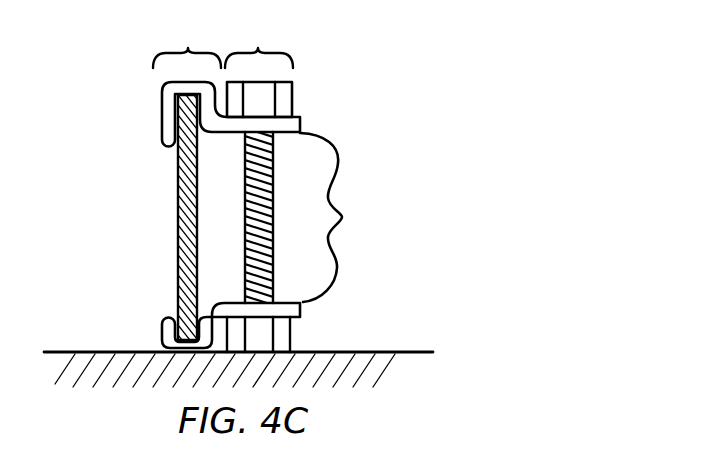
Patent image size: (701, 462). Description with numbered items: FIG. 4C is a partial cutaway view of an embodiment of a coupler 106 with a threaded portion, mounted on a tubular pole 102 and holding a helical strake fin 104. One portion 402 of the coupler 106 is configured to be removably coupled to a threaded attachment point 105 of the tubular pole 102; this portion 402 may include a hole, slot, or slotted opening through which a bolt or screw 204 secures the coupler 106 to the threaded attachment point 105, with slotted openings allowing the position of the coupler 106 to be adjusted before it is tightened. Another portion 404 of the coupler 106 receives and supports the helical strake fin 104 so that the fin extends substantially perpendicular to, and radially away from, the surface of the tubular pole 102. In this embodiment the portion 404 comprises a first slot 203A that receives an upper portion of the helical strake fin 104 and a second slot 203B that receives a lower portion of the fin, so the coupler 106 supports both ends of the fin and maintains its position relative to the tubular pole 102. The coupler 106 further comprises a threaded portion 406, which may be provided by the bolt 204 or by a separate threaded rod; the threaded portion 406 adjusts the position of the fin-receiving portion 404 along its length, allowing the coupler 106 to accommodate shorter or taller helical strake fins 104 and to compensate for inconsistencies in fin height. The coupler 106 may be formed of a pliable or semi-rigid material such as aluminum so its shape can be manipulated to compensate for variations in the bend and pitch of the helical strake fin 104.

The tubular pole 102 is at (343, 367).
The helical strake fin 104 is at (187, 220).
The threaded attachment point 105 is at (282, 338).
The coupler 106 is at (392, 142).
The first slot 203A is at (169, 115).
The second slot 203B is at (169, 333).
The bolt 204 is at (281, 104).
The portion of the coupler 402 is at (259, 47).
The portion of the coupler 404 is at (187, 47).
The threaded portion 406 is at (315, 216).